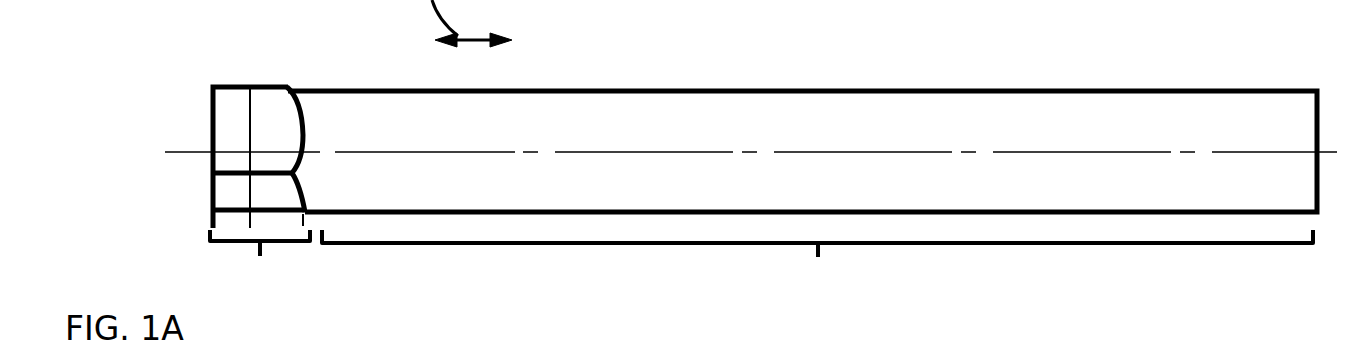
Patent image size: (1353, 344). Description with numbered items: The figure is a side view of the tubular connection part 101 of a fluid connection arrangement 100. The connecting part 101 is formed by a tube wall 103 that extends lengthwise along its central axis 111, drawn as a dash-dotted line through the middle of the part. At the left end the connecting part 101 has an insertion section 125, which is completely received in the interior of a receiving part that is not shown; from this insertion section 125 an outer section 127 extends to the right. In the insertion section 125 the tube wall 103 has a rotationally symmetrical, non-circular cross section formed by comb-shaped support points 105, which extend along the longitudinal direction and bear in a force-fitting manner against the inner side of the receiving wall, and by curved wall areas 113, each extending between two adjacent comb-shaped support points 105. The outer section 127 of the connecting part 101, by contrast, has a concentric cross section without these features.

The fluid connection arrangement 100 is at (709, 151).
The tubular connection part 101 is at (133, 115).
The tube wall 103 is at (713, 88).
The comb-shaped support points 105 is at (279, 86).
The central axis 111 is at (867, 148).
The curved wall areas 113 is at (233, 118).
The insertion section 125 is at (260, 265).
The outer section 127 is at (817, 266).